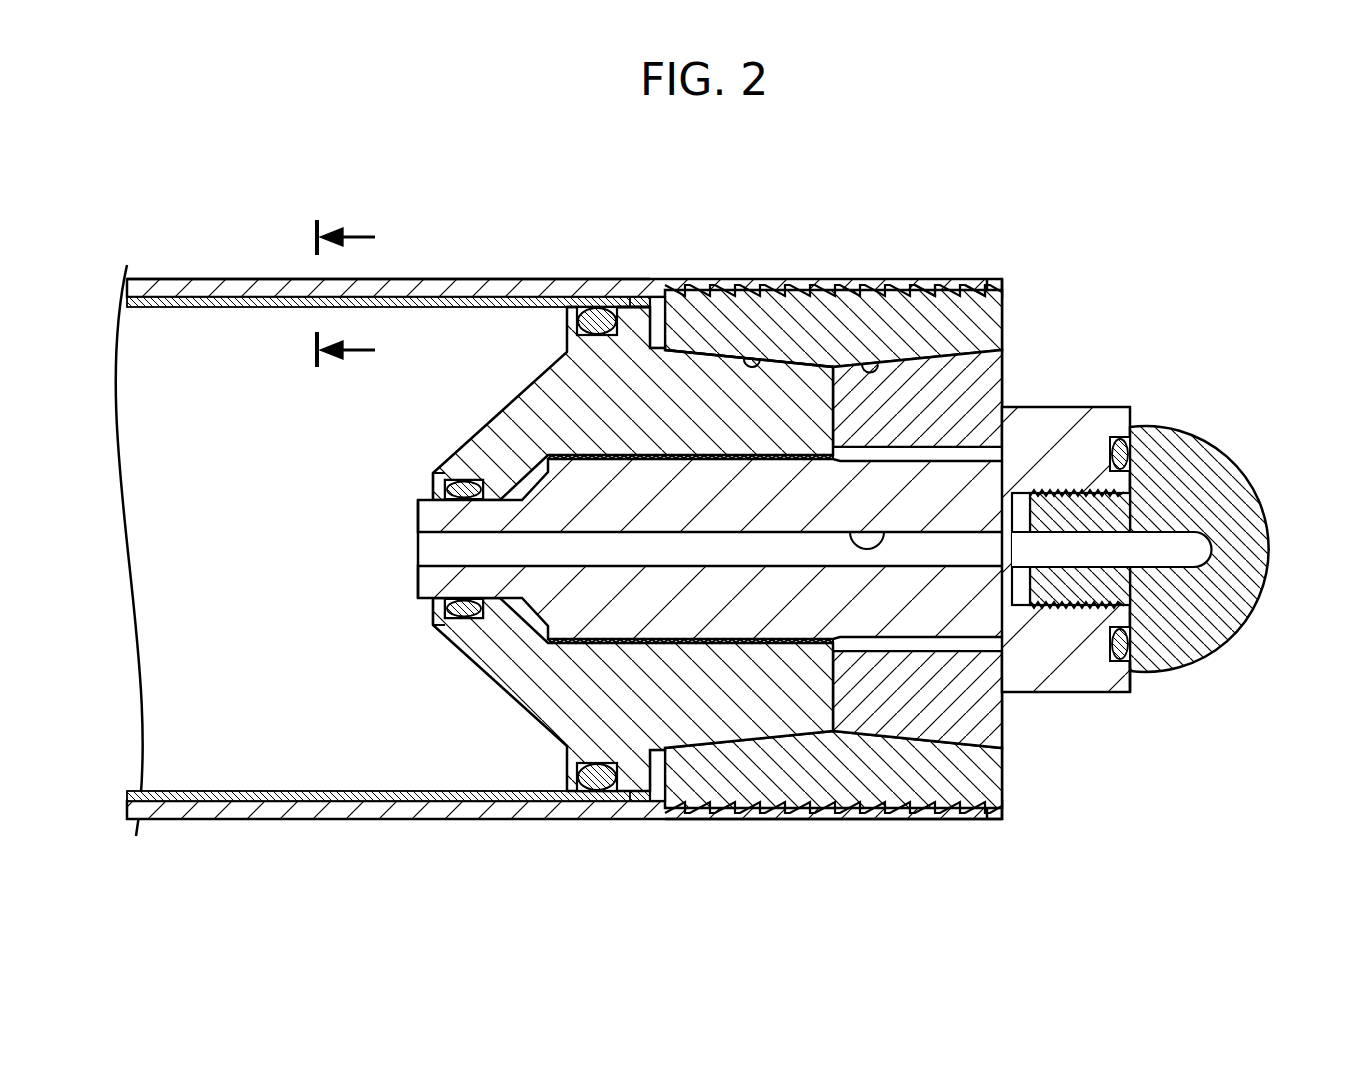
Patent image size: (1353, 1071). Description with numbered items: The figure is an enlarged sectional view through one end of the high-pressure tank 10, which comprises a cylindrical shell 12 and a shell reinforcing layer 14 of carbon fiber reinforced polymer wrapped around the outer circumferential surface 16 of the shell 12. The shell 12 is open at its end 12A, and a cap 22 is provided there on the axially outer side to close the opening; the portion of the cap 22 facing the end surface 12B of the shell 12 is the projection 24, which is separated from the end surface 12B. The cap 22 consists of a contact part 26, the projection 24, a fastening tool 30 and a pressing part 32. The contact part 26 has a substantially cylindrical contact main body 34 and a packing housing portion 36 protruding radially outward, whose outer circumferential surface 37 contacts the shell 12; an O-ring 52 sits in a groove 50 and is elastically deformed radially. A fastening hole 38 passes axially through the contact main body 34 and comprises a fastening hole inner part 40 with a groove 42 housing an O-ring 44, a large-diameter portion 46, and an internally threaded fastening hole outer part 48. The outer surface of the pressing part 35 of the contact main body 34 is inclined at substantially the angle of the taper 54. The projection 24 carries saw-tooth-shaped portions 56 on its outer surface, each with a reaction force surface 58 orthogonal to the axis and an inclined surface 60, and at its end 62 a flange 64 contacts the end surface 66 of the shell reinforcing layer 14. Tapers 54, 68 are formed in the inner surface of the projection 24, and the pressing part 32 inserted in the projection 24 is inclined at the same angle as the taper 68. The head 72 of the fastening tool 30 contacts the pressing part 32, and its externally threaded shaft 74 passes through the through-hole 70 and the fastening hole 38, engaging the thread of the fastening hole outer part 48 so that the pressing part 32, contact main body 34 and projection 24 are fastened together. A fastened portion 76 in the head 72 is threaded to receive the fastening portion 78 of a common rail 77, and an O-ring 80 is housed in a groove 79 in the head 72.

The high-pressure tank 10 is at (1116, 183).
The shell 12 is at (196, 308).
The end 12A is at (646, 300).
The end surface 12B is at (660, 806).
The shell reinforcing layer 14 is at (495, 279).
The outer circumferential surface 16 is at (228, 280).
The cap 22 is at (1060, 309).
The projection 24 is at (657, 330).
The contact part 26 is at (494, 415).
The fastening tool 30 is at (1122, 404).
The pressing part 32 is at (1008, 377).
The contact main body 34 is at (478, 672).
The pressing part 35 is at (686, 368).
The packing housing portion 36 is at (567, 322).
The outer circumferential surface 37 is at (633, 306).
The fastening hole 38 is at (497, 506).
The fastening hole inner part 40 is at (433, 586).
The groove 42 is at (433, 503).
The O-ring 44 is at (458, 480).
The large-diameter portion 46 is at (530, 610).
The fastening hole outer part 48 is at (690, 632).
The groove 50 is at (600, 305).
The O-ring 52 is at (590, 306).
The taper 54 is at (768, 362).
The saw-tooth-shaped portions 56 is at (892, 289).
The reaction force surface 58 is at (930, 289).
The inclined surface 60 is at (962, 289).
The end 62 is at (1003, 290).
The flange 64 is at (1000, 281).
The end surface 66 is at (1003, 820).
The taper 68 is at (868, 366).
The through-hole 70 is at (868, 546).
The head 72 is at (1060, 412).
The shaft 74 is at (613, 624).
The fastened portion 76 is at (1063, 612).
The common rail 77 is at (1258, 522).
The fastening portion 78 is at (1084, 614).
The groove 79 is at (1130, 652).
The O-ring 80 is at (1132, 634).